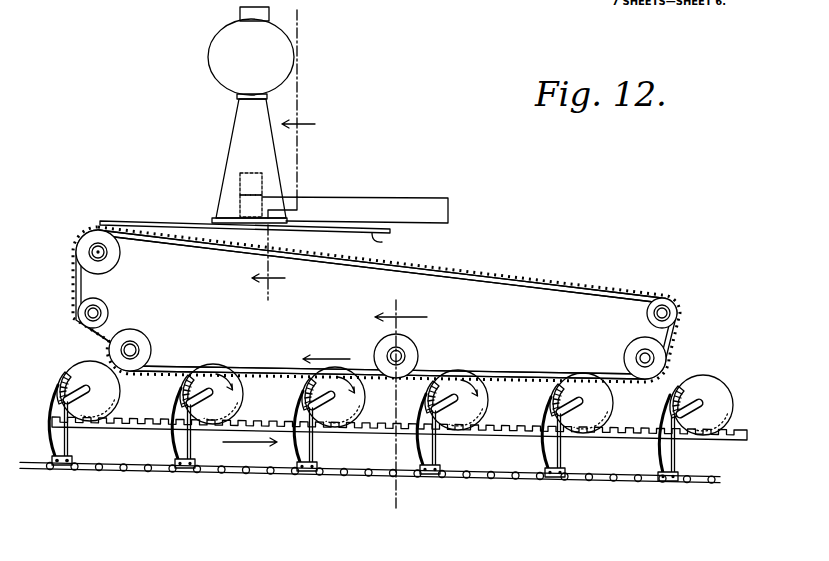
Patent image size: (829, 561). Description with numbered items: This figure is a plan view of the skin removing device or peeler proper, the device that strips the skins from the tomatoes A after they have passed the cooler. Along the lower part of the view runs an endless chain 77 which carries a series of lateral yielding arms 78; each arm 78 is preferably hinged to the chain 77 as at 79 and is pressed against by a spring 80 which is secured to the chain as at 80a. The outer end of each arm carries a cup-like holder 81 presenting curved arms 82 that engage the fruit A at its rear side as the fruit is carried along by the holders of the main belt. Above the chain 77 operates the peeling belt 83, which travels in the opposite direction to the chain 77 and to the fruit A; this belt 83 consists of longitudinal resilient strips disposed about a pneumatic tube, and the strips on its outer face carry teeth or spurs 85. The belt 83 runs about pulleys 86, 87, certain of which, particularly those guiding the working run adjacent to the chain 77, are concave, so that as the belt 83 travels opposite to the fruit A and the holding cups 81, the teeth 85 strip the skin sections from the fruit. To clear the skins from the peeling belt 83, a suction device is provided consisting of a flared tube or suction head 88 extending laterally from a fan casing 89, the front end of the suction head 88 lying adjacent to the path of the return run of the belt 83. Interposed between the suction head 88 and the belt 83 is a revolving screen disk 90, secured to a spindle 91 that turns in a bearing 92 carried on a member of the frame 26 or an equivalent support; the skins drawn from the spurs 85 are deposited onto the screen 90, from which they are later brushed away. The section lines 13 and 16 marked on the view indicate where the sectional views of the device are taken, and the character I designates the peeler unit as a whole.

The fan casing 89 is at (251, 53).
The suction head 88 is at (249, 161).
The spindle 91 is at (240, 174).
The bearing 92 is at (240, 200).
The section line 16 is at (286, 159).
The framework 26 is at (357, 203).
The revolving screen disk 90 is at (379, 237).
The conveyor unit I is at (376, 304).
The teeth or spurs 85 is at (458, 273).
The peeling belt 83 is at (503, 370).
The pulley 87 is at (79, 242).
The pulley 86 is at (141, 337).
The section line 13 is at (401, 408).
The cup-like holder 81 is at (62, 388).
The curved arms 82 is at (80, 394).
The spring 80 is at (52, 440).
The yielding arm 78 is at (68, 447).
The hinge 79 is at (63, 465).
The spring securing point 80a is at (56, 466).
The tomato A is at (710, 387).
The endless chain 77 is at (235, 474).